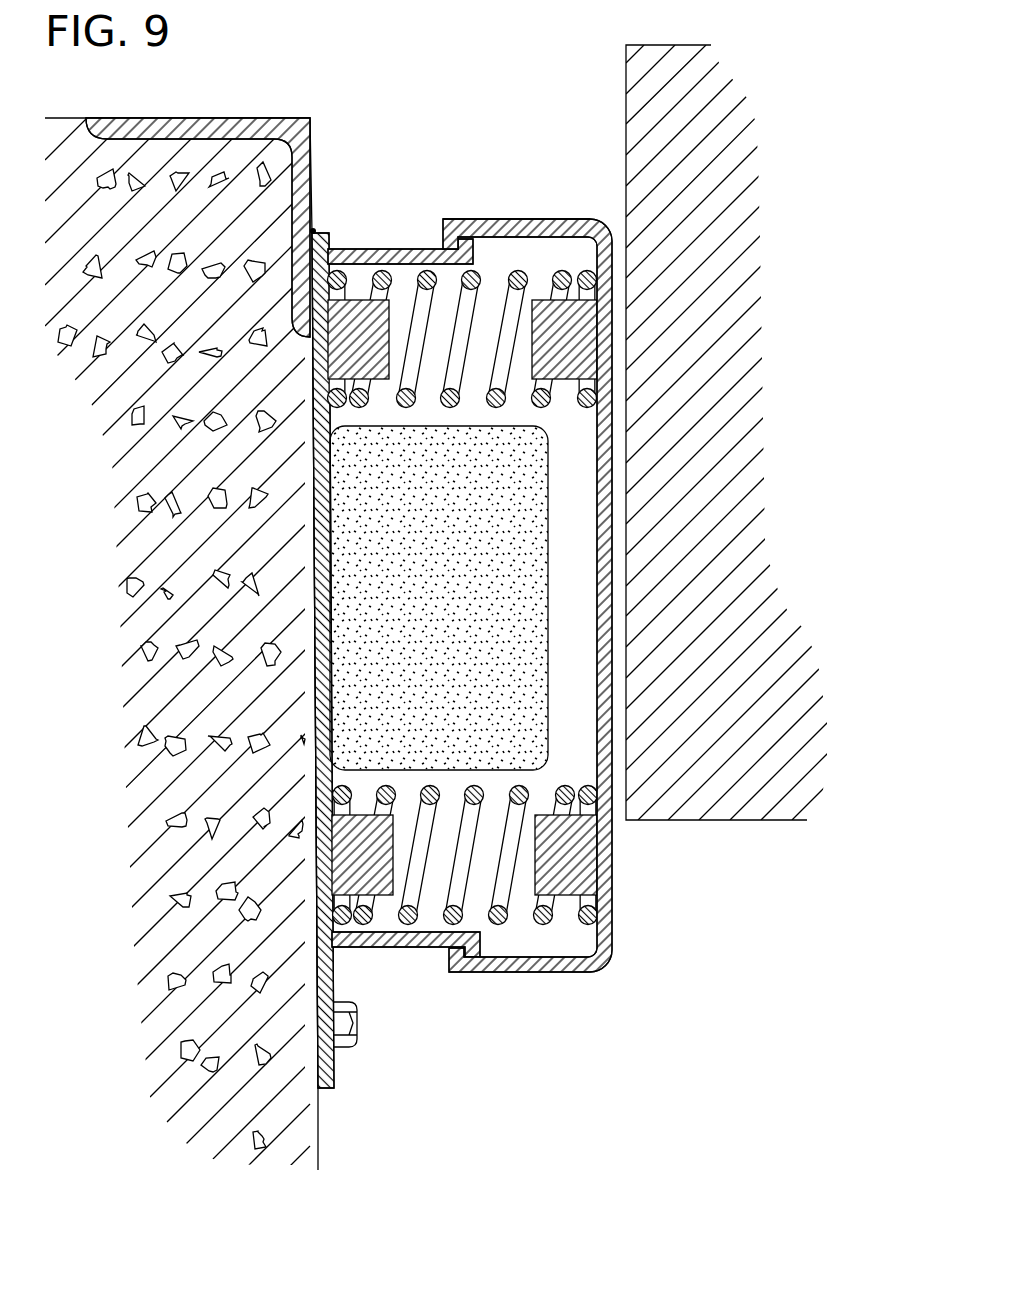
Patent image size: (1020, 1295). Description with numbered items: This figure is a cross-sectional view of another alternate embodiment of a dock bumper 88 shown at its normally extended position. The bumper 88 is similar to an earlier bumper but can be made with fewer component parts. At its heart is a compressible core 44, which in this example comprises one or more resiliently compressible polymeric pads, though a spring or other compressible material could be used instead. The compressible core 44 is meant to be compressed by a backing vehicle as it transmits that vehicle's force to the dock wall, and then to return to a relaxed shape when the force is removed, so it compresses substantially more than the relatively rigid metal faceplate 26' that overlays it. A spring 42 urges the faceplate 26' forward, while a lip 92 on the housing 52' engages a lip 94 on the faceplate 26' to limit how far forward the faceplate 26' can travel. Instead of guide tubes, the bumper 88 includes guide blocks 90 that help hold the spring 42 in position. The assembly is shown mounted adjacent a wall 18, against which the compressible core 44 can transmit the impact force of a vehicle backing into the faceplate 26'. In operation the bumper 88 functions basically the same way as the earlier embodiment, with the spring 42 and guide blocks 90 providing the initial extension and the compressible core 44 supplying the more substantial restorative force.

The wall / structure 18 is at (716, 822).
The bumper 88 is at (447, 135).
The guide blocks 90 is at (357, 298).
The lip 94 is at (440, 248).
The lip 92 is at (498, 217).
The faceplate 26' is at (527, 544).
The compressible core 44 is at (548, 572).
The spring 42 is at (498, 923).
The housing 52' is at (406, 1006).